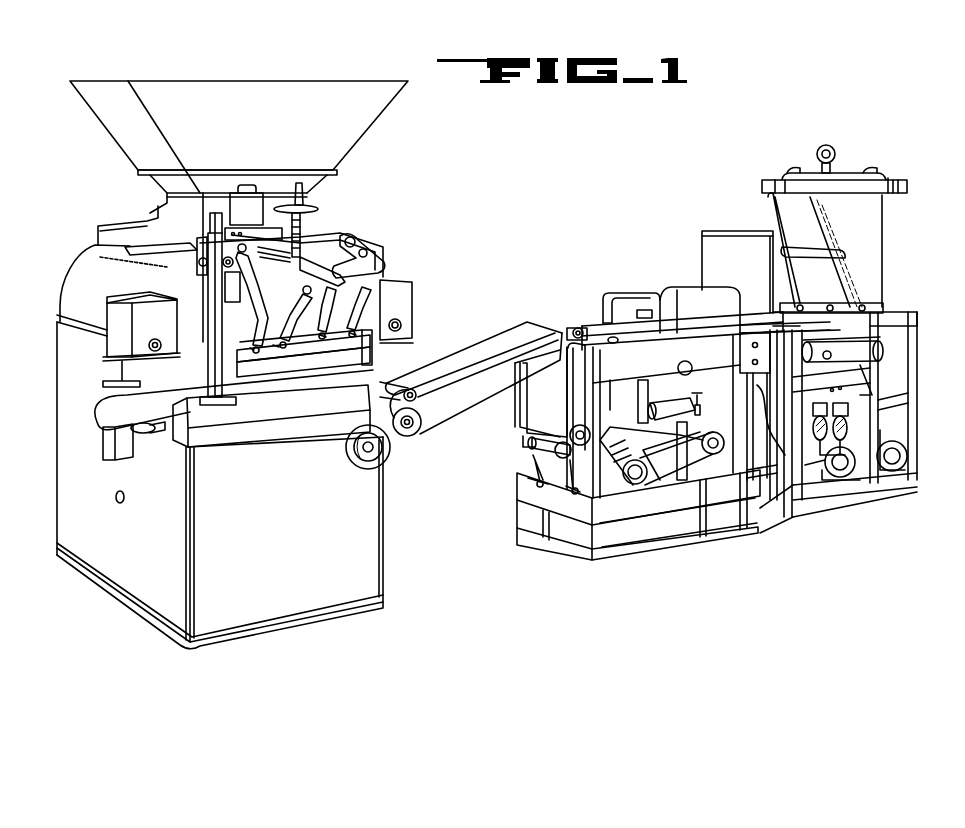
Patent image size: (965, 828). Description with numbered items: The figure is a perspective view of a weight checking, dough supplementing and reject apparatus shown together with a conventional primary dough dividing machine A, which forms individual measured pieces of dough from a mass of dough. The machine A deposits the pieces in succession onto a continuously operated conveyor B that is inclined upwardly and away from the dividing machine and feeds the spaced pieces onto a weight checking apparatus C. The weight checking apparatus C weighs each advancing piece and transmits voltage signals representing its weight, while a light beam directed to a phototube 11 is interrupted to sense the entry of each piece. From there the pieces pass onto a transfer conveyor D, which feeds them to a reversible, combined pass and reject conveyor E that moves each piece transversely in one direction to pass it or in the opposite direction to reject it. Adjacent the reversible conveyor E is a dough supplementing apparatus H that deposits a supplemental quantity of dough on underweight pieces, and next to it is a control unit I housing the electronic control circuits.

The primary dough dividing machine A is at (388, 256).
The conveyor B is at (468, 349).
The weight checking apparatus C is at (586, 321).
The phototube 11 is at (644, 308).
The transfer conveyor D is at (763, 323).
The reversible combined pass and reject conveyor E is at (886, 362).
The dough supplementing apparatus H is at (859, 238).
The control unit I is at (718, 248).